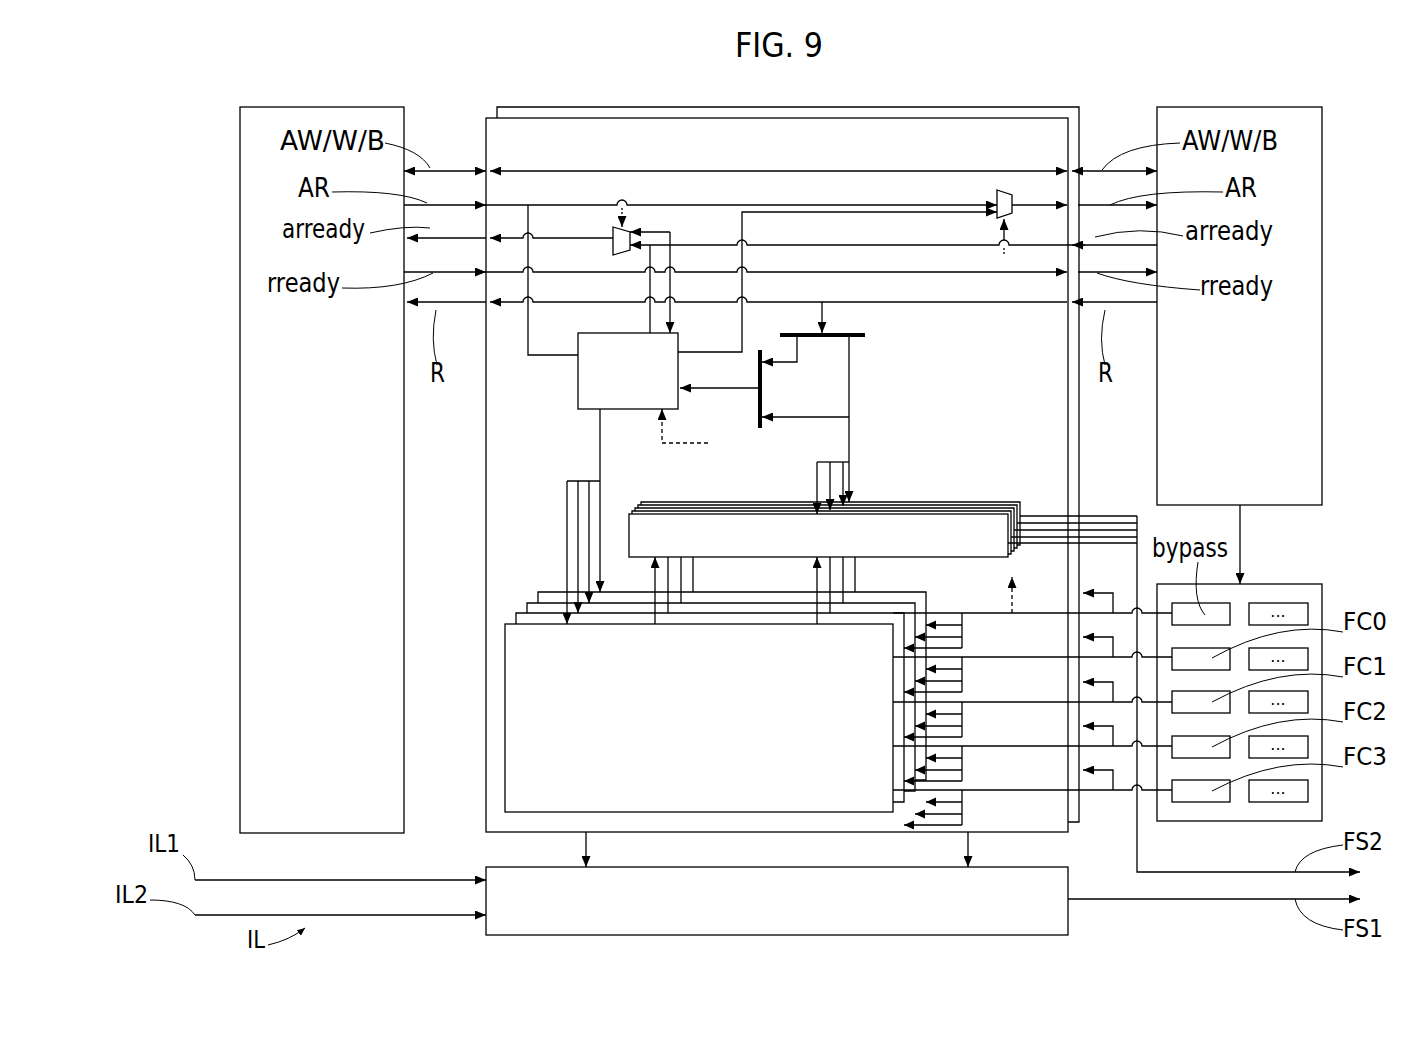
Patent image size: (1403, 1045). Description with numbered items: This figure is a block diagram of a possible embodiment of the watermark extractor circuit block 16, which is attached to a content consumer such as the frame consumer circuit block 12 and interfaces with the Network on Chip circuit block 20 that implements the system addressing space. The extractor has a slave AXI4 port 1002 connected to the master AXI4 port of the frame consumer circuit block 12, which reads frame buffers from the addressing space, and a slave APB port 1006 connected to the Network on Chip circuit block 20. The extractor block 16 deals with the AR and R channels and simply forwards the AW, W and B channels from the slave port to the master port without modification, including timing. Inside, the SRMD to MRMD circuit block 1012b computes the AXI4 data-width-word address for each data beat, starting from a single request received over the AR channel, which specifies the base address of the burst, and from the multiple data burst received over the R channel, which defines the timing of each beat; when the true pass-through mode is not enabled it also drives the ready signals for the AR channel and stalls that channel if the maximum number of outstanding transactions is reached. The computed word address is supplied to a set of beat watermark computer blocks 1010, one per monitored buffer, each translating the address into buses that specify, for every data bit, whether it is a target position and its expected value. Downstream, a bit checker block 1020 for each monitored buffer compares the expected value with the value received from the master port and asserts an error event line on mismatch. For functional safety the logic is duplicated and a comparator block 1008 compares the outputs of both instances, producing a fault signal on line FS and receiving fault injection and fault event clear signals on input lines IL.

The frame consumer circuit block 12 is at (255, 500).
The watermark extractor circuit block 16 is at (935, 95).
The Network on Chip (NoC) circuit block 20 is at (1293, 360).
The slave AXI4 port 1002 is at (443, 140).
The slave APB port 1006 is at (1115, 808).
The comparator block 1008 is at (752, 880).
The beat watermark computer block 1010 is at (752, 800).
The SRMD to MRMD circuit block 1012b is at (600, 393).
The bit checker block 1020 is at (917, 522).